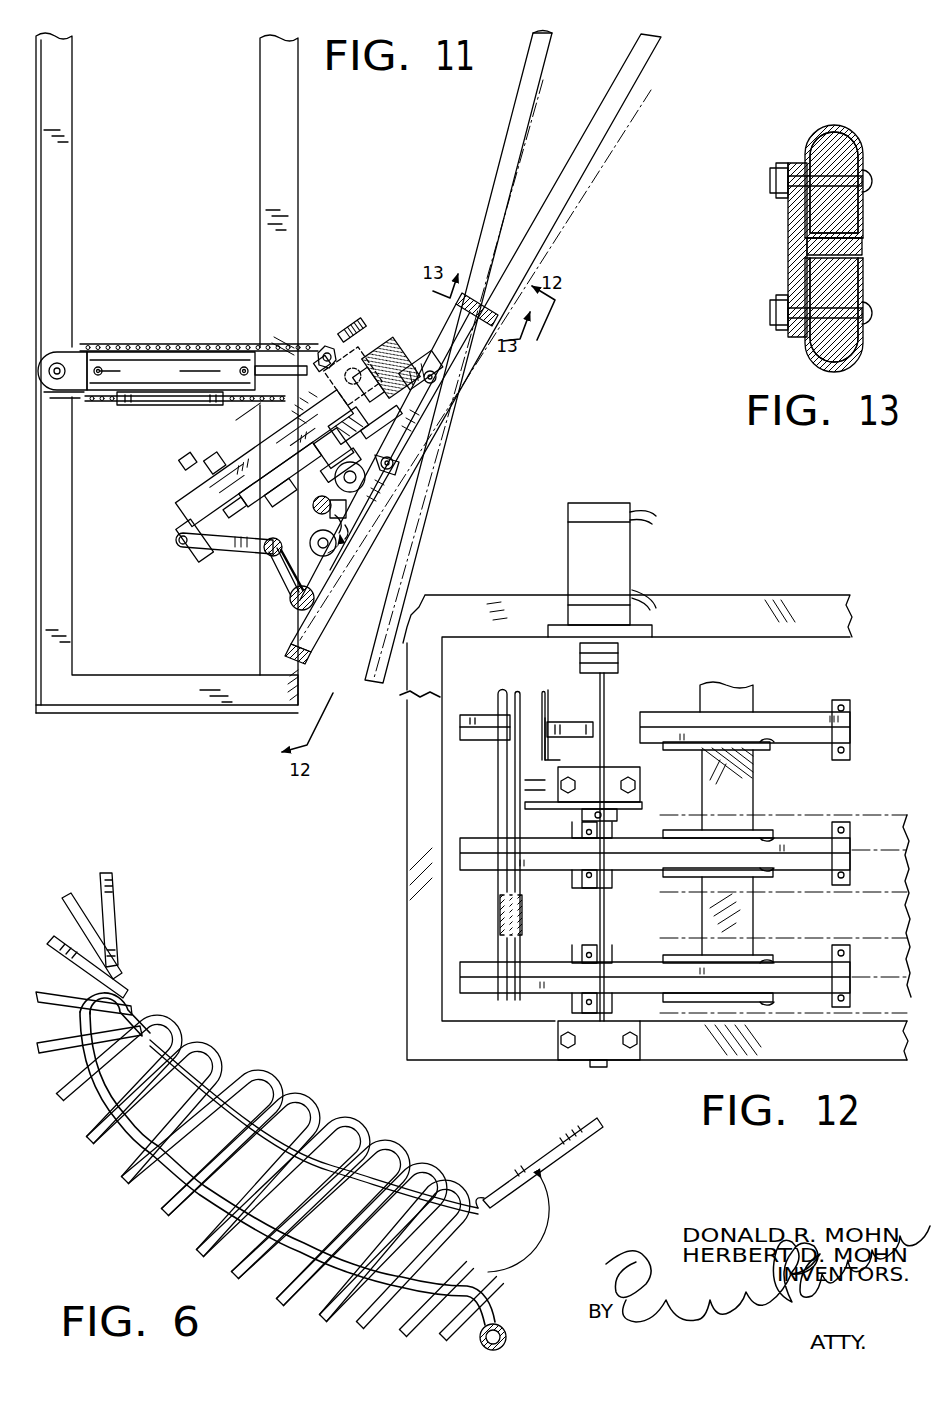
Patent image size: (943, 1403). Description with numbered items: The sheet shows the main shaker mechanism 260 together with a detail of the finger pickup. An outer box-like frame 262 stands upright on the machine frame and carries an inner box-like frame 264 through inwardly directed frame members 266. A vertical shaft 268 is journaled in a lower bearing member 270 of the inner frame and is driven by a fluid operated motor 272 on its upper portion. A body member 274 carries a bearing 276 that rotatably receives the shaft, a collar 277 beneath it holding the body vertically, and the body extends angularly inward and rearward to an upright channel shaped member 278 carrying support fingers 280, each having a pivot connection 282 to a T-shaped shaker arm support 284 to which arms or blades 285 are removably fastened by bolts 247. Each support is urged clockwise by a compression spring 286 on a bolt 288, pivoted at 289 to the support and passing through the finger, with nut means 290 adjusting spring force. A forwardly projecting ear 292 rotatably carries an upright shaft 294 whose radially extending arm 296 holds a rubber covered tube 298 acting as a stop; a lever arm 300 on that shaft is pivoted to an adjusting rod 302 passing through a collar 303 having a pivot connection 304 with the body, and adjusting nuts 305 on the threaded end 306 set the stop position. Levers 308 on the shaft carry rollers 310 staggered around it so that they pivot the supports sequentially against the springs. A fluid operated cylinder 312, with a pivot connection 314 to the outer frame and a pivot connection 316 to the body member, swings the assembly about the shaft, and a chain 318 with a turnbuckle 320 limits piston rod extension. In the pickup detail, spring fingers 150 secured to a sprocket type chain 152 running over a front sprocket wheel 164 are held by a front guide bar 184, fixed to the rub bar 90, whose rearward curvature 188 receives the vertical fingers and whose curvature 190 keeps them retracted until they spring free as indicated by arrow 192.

In FIG. 11, the box-like frame 262 is at (63, 175).
In FIG. 11, the inner box-like frame 264 is at (292, 152).
In FIG. 12, the inner box-like frame 264 is at (412, 682).
In FIG. 11, the frame members 266 is at (150, 703).
In FIG. 11, the vertical shaft 268 is at (303, 477).
In FIG. 12, the vertical shaft 268 is at (605, 702).
In FIG. 12, the lower bearing member 270 is at (603, 1044).
In FIG. 12, the fluid operated motor 272 is at (610, 513).
In FIG. 11, the body member 274 is at (310, 450).
In FIG. 12, the body member 274 is at (677, 780).
In FIG. 11, the bearing 276 is at (330, 457).
In FIG. 12, the bearing 276 is at (608, 780).
In FIG. 12, the collar 277 is at (640, 812).
In FIG. 11, the upright channel shaped member 278 is at (400, 395).
In FIG. 12, the upright channel shaped member 278 is at (748, 918).
In FIG. 11, the support fingers 280 is at (415, 360).
In FIG. 12, the support fingers 280 is at (765, 743).
In FIG. 11, the pivot connection 282 is at (431, 371).
In FIG. 11, the shaker arm support 284 is at (482, 330).
In FIG. 13, the shaker arm support 284 is at (792, 228).
In FIG. 12, the shaker arm support 284 is at (848, 822).
In FIG. 11, the arms or blades 285 is at (613, 83).
In FIG. 13, the arms or blades 285 is at (866, 278).
In FIG. 12, the arms or blades 285 is at (884, 893).
In FIG. 11, the compression spring 286 is at (357, 422).
In FIG. 11, the bolt 288 is at (380, 450).
In FIG. 11, the pivot connection 289 is at (392, 466).
In FIG. 11, the nut means 290 is at (293, 420).
In FIG. 11, the forwardly projecting ear 292 is at (277, 563).
In FIG. 12, the forwardly projecting ear 292 is at (522, 808).
In FIG. 11, the upright shaft 294 is at (268, 553).
In FIG. 12, the upright shaft 294 is at (537, 698).
In FIG. 11, the radially extending arm 296 is at (287, 585).
In FIG. 12, the radially extending arm 296 is at (530, 784).
In FIG. 11, the rubber covered tube 298 is at (297, 602).
In FIG. 12, the rubber covered tube 298 is at (499, 917).
In FIG. 11, the lever arm 300 is at (207, 548).
In FIG. 11, the adjusting rod 302 is at (237, 483).
In FIG. 11, the collar 303 is at (323, 345).
In FIG. 11, the pivot connection 304 is at (327, 350).
In FIG. 11, the adjusting nuts 305 is at (280, 345).
In FIG. 11, the threaded end 306 is at (357, 317).
In FIG. 11, the levers 308 is at (232, 520).
In FIG. 12, the levers 308 is at (580, 713).
In FIG. 11, the rollers 310 is at (360, 478).
In FIG. 12, the rollers 310 is at (553, 732).
In FIG. 11, the fluid operated cylinder 312 is at (160, 362).
In FIG. 11, the pivot connection 314 is at (63, 363).
In FIG. 11, the pivot connection 316 is at (380, 357).
In FIG. 11, the chain 318 is at (133, 347).
In FIG. 11, the turnbuckle 320 is at (157, 399).
In FIG. 11, the main shaker mechanism 260 is at (528, 378).
In FIG. 12, the main shaker mechanism 260 is at (390, 873).
In FIG. 13, the bolts 247 is at (769, 182).
In FIG. 6, the curvature 188 is at (128, 992).
In FIG. 6, the front guide bar 184 is at (160, 1170).
In FIG. 6, the sprocket type chain 152 is at (293, 1117).
In FIG. 6, the front sprocket wheel 164 is at (437, 1190).
In FIG. 6, the spring fingers 150 is at (560, 1153).
In FIG. 6, the curvature 190 is at (262, 1236).
In FIG. 6, the arrow 192 is at (520, 1255).
In FIG. 6, the rub bar 90 is at (507, 1338).